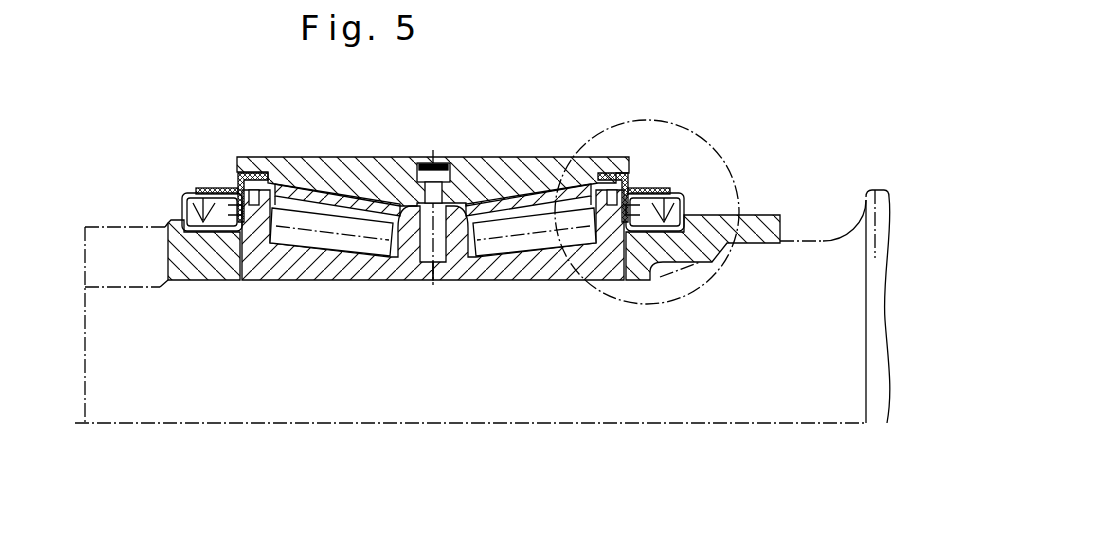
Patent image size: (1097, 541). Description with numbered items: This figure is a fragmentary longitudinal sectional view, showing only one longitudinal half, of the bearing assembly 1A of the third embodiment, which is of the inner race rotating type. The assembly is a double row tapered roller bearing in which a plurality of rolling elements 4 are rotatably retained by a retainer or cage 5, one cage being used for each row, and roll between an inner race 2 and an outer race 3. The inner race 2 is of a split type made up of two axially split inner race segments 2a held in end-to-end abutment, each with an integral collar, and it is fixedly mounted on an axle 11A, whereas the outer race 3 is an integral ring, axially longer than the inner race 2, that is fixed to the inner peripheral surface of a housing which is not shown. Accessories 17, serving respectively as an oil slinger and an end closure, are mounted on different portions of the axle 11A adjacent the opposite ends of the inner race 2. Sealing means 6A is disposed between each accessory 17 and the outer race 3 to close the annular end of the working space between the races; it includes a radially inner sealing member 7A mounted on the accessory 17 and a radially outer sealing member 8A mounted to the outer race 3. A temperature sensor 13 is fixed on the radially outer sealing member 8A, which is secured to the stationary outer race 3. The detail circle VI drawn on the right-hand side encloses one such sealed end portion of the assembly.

The bearing assembly 1A is at (461, 305).
The inner race 2 is at (433, 361).
The inner race segment 2a is at (358, 280).
The outer race 3 is at (480, 158).
The rolling elements 4 is at (330, 228).
The retainer or cage 5 is at (372, 205).
The sealing means 6A is at (461, 179).
The radially inner sealing member 7A is at (184, 210).
The radially outer sealing member 8A is at (200, 190).
The axle 11A is at (670, 393).
The temperature sensor 13 is at (237, 193).
The accessories 17 is at (207, 280).
The enlarged portion VI is at (672, 121).